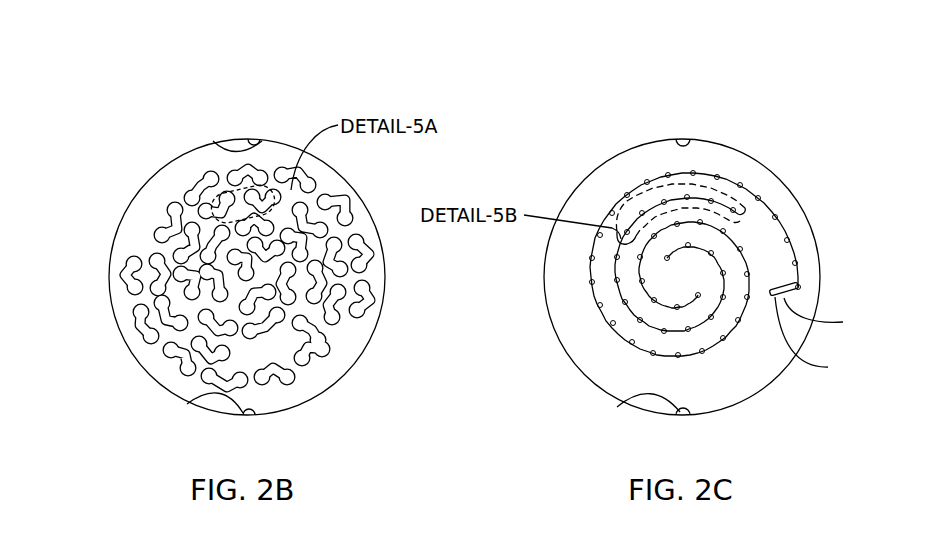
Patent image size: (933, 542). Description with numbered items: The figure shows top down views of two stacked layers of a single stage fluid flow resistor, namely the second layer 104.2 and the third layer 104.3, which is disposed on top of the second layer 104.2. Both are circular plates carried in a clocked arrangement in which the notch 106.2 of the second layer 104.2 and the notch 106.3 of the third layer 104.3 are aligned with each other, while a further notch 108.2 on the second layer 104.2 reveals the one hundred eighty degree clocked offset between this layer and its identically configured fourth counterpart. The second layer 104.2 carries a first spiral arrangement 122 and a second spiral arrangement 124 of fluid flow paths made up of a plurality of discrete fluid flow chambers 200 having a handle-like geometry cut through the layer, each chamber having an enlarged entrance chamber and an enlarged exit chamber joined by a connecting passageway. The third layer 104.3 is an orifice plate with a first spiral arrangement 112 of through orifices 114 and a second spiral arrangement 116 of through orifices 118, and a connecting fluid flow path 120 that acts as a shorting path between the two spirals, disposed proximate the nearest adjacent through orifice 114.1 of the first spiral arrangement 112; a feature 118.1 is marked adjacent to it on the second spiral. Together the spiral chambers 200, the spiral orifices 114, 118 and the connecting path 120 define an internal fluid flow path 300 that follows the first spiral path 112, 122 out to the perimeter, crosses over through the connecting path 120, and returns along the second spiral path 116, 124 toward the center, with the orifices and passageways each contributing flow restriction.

In FIG. 2B, the second layer 104.2 is at (268, 141).
In FIG. 2B, the notch 108.2 is at (215, 152).
In FIG. 2B, the notch 106.2 is at (197, 397).
In FIG. 2B, the fluid flow chamber 200 is at (132, 255).
In FIG. 2B, the internal fluid flow path 300 is at (145, 335).
In FIG. 2C, the internal fluid flow path 300 is at (623, 302).
In FIG. 2B, the first spiral arrangement 122 is at (335, 327).
In FIG. 2B, the second spiral arrangement 124 is at (366, 321).
In FIG. 2C, the third layer 104.3 is at (722, 143).
In FIG. 2C, the notch 106.3 is at (629, 397).
In FIG. 2C, the first spiral arrangement 112 is at (703, 330).
In FIG. 2C, the through orifices 114 is at (750, 228).
In FIG. 2C, the through orifice 114.1 is at (828, 338).
In FIG. 2C, the second spiral arrangement 116 is at (615, 203).
In FIG. 2C, the through orifices 118 is at (647, 182).
In FIG. 2C, the connection tab 118.1 is at (798, 286).
In FIG. 2C, the connecting fluid flow path 120 is at (830, 316).